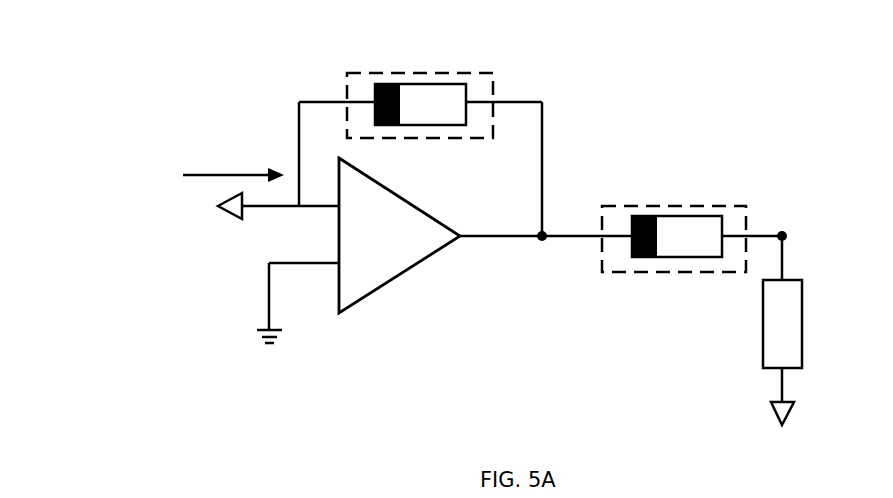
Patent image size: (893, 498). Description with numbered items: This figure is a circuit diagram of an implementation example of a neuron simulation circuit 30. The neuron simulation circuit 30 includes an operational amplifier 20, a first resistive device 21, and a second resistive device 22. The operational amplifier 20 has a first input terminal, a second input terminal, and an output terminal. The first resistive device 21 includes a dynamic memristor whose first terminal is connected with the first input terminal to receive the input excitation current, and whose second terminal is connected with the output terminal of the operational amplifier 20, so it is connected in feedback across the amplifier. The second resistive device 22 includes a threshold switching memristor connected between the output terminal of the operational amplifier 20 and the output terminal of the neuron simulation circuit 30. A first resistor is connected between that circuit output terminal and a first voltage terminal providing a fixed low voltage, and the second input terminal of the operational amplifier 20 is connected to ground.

The neuron simulation circuit 30 is at (599, 36).
The operational amplifier 20 is at (399, 235).
The first resistive device 21 is at (462, 73).
The second resistive device 22 is at (717, 206).